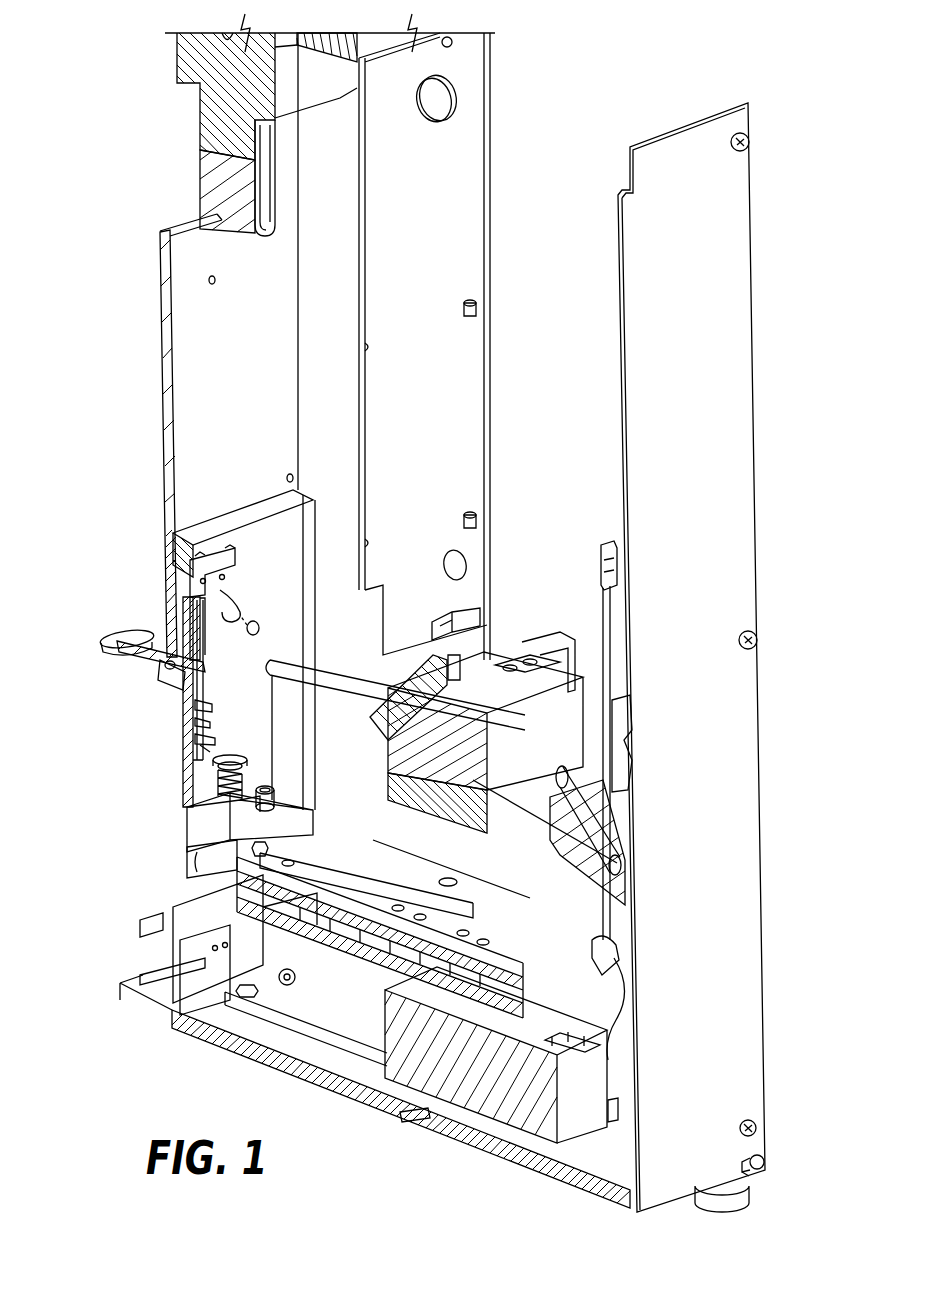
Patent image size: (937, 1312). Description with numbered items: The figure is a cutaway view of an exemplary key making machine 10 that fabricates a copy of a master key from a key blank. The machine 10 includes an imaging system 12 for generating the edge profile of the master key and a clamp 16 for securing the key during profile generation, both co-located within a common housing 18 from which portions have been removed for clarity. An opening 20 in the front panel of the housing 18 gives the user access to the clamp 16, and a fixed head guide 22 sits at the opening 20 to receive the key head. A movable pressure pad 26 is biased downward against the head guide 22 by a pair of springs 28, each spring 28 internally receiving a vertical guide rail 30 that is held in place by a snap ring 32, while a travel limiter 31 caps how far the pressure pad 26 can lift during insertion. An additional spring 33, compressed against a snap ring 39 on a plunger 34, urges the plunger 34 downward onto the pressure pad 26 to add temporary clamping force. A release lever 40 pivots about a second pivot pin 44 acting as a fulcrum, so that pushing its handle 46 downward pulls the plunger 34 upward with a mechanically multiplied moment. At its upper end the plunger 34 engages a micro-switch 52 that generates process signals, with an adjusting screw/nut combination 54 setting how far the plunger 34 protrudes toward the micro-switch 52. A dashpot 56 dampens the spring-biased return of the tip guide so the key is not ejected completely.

The key making machine 10 is at (822, 50).
The imaging system 12 is at (125, 125).
The housing 18 is at (165, 265).
The clamp 16 is at (78, 533).
The handle 46 is at (135, 632).
The release lever 40 is at (152, 668).
The second pivot pin 44 is at (172, 672).
The micro-switch 52 is at (228, 592).
The opening 20 is at (232, 620).
The adjusting screw/nut combination 54 is at (213, 630).
The spring 33 is at (212, 726).
The snap ring 39 is at (205, 746).
The guide rail 30 is at (240, 758).
The snap ring 32 is at (240, 762).
The springs 28 is at (260, 782).
The travel limiter 31 is at (272, 796).
The plunger 34 is at (178, 790).
The pressure pad 26 is at (180, 830).
The head guide 22 is at (182, 870).
The dashpot 56 is at (585, 965).